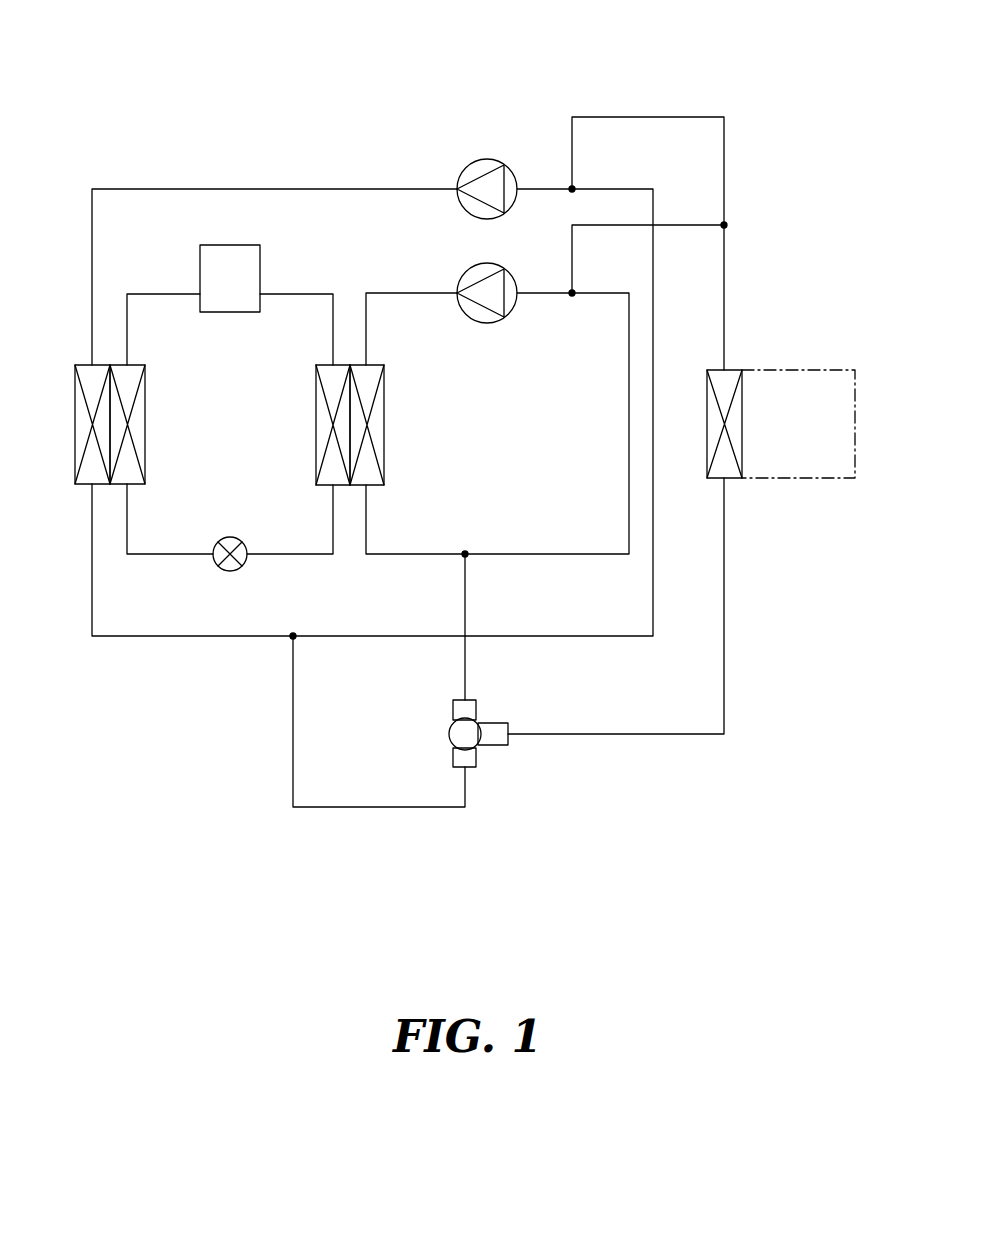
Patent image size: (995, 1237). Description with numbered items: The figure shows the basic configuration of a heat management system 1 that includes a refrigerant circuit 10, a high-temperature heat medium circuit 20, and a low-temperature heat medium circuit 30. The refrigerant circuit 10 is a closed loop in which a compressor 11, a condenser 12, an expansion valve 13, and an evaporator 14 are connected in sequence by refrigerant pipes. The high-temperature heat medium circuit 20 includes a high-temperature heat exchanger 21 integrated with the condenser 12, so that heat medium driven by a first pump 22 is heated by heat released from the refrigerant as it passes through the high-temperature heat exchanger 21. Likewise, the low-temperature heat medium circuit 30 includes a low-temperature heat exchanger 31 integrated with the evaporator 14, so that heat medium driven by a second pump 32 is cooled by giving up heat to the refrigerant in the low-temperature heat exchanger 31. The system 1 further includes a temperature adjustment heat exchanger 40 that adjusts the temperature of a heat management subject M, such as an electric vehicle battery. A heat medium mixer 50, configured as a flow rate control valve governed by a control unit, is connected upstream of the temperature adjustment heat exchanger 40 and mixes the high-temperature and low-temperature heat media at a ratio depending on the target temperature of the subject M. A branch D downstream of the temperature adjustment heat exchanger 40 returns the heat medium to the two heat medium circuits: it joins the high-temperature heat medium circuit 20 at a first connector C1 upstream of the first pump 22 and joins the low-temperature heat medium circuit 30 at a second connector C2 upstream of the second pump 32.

The heat management system 1 is at (619, 77).
The refrigerant circuit 10 is at (330, 294).
The compressor 11 is at (247, 247).
The condenser 12 is at (140, 365).
The expansion valve 13 is at (230, 537).
The evaporator 14 is at (318, 366).
The high-temperature heat medium circuit 20 is at (232, 189).
The high-temperature heat exchanger 21 is at (78, 365).
The first pump 22 is at (487, 160).
The low-temperature heat medium circuit 30 is at (414, 294).
The low-temperature heat exchanger 31 is at (382, 366).
The second pump 32 is at (487, 264).
The temperature adjustment heat exchanger 40 is at (735, 480).
The heat medium mixer 50 is at (488, 723).
The first connector C1 is at (573, 188).
The second connector C2 is at (573, 292).
The branch D is at (727, 225).
The heat management subject M is at (811, 360).